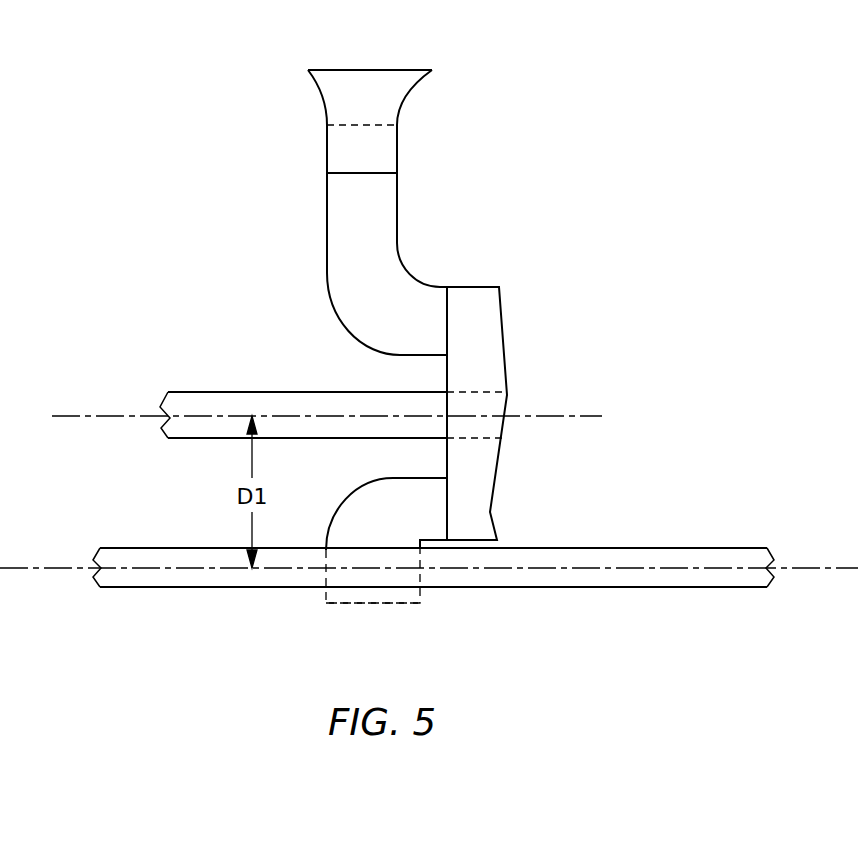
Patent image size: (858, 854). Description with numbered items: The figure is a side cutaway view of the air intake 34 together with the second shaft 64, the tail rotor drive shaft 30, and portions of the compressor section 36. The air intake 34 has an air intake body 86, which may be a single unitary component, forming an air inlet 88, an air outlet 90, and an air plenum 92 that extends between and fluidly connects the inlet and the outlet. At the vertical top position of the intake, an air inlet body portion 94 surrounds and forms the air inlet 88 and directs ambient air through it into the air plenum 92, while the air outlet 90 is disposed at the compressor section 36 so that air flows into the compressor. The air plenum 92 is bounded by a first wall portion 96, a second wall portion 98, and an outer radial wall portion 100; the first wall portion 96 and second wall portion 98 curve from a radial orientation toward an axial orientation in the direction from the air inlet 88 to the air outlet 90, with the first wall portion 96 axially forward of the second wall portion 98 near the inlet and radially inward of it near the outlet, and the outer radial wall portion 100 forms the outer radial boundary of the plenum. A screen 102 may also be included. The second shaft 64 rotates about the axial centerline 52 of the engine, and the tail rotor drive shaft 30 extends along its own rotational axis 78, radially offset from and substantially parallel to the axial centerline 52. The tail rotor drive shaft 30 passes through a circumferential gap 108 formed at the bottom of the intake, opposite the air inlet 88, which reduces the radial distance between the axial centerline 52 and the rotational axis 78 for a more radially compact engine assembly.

The tail rotor drive shaft 30 is at (185, 578).
The air intake 34 is at (483, 213).
The compressor section 36 is at (475, 352).
The axial centerline 52 is at (585, 416).
The second shaft 64 is at (240, 402).
The rotational axis 78 is at (680, 568).
The air intake body 86 is at (381, 303).
The air inlet 88 is at (377, 87).
The air outlet 90 is at (450, 310).
The air plenum 92 is at (372, 153).
The air inlet body portion 94 is at (422, 87).
The first wall portion 96 is at (327, 227).
The second wall portion 98 is at (399, 212).
The outer radial wall portion 100 is at (358, 126).
The screen 102 is at (340, 173).
The circumferential gap 108 is at (293, 598).